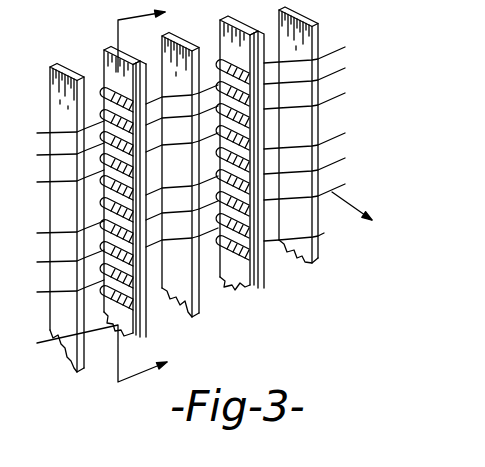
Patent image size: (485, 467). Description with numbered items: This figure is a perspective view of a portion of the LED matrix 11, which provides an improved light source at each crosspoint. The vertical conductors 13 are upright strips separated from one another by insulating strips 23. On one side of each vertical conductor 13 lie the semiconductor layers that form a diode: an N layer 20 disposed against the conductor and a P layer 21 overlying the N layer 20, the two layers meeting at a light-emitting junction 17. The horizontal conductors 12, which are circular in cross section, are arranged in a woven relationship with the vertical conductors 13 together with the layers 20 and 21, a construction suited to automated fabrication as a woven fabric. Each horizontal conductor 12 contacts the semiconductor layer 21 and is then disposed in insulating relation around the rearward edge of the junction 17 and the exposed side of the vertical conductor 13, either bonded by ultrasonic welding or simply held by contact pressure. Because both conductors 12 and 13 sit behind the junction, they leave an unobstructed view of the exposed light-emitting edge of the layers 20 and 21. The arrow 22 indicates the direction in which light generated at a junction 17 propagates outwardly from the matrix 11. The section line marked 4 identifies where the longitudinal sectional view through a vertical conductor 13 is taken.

The section line 4- 4 is at (113, 194).
The matrix 11 is at (340, 42).
The horizontal conductors 12 is at (341, 137).
The vertical conductors 13 is at (266, 283).
The light-emitting junction 17 is at (251, 290).
The N layer 20 is at (256, 290).
The P layer 21 is at (229, 275).
The arrow 22 is at (350, 204).
The insulating strips 23 is at (318, 244).